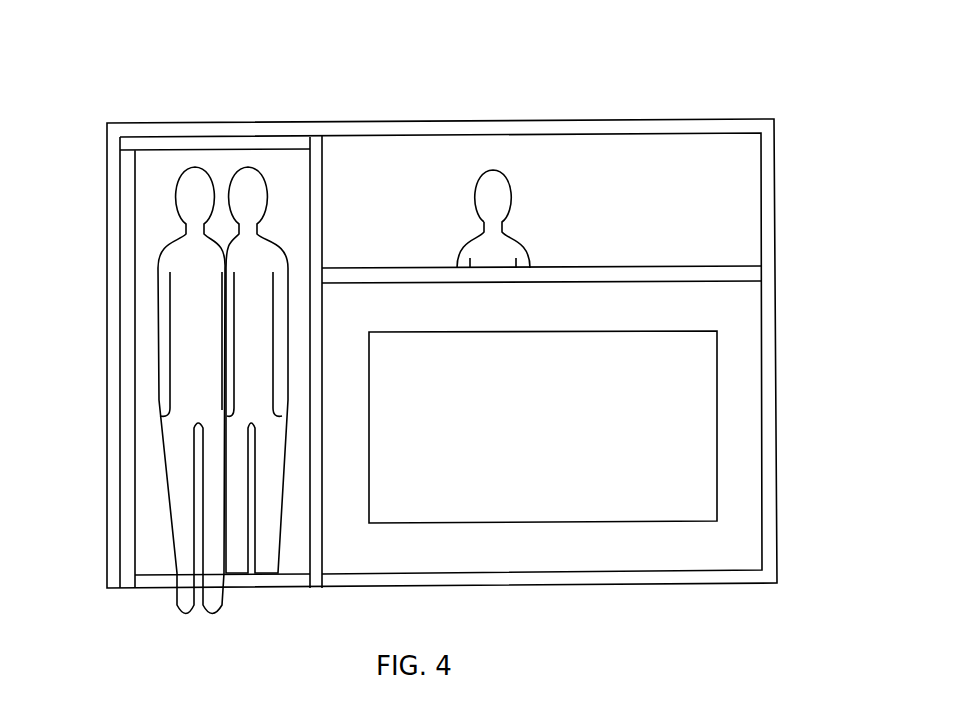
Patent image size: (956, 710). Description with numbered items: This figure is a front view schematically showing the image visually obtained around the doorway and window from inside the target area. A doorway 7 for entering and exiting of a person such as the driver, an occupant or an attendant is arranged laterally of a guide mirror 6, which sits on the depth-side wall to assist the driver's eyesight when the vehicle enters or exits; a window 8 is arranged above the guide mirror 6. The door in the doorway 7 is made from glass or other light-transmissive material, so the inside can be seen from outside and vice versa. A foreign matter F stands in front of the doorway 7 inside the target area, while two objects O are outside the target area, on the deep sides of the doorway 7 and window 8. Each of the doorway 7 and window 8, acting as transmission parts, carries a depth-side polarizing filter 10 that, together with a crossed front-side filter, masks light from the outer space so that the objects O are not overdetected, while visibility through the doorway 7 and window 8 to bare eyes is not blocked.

The guide mirror 6 is at (717, 425).
The doorway 7 is at (162, 165).
The window 8 is at (460, 163).
The polarizing filter 10 is at (287, 165).
The object O is at (245, 177).
The foreign matter F is at (168, 259).